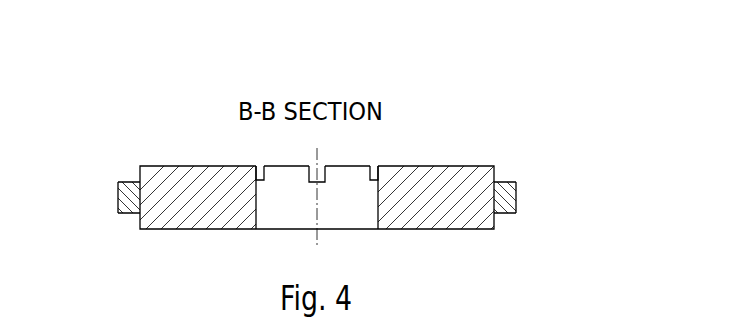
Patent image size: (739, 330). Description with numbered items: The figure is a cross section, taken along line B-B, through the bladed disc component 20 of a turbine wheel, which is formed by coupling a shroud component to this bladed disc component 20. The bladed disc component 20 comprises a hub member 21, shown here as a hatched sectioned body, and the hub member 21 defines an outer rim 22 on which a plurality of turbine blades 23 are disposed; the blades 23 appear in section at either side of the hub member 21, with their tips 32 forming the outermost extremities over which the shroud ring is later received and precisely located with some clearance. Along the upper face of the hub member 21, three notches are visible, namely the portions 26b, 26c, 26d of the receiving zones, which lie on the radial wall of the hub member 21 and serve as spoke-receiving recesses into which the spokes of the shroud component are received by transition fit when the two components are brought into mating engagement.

The bladed disc component 20 is at (470, 138).
The hub member 21 is at (169, 164).
The outer rim 22 is at (137, 230).
The turbine blades 23 is at (133, 195).
The portion of receiving zone 26b is at (381, 166).
The portion of receiving zone 26c is at (326, 165).
The portion of receiving zone 26d is at (259, 164).
The tips of the blades 32 is at (115, 180).